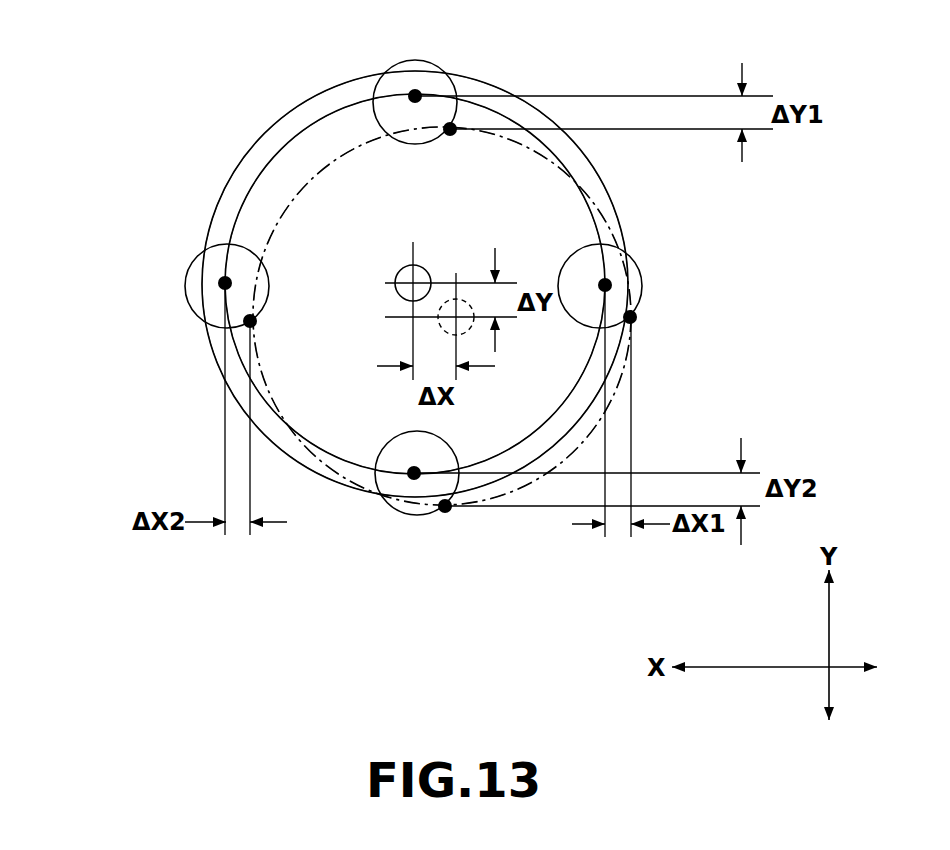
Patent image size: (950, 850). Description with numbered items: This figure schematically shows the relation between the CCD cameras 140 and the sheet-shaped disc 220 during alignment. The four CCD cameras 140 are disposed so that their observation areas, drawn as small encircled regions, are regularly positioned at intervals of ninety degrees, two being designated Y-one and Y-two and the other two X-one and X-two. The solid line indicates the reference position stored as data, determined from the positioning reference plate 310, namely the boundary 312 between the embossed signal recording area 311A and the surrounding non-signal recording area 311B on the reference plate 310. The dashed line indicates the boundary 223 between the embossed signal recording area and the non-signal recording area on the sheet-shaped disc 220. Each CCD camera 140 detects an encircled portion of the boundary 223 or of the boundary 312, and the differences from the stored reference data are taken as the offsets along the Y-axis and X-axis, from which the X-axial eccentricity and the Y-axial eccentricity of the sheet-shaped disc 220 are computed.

The positioning reference plate 310 is at (289, 108).
The boundary 312 is at (322, 113).
The embossed signal recording area 311A is at (257, 225).
The non-signal recording area 311B is at (255, 173).
The CCD camera 140 is at (437, 68).
The sheet-shaped disc 220 is at (670, 347).
The boundary 223 is at (610, 405).